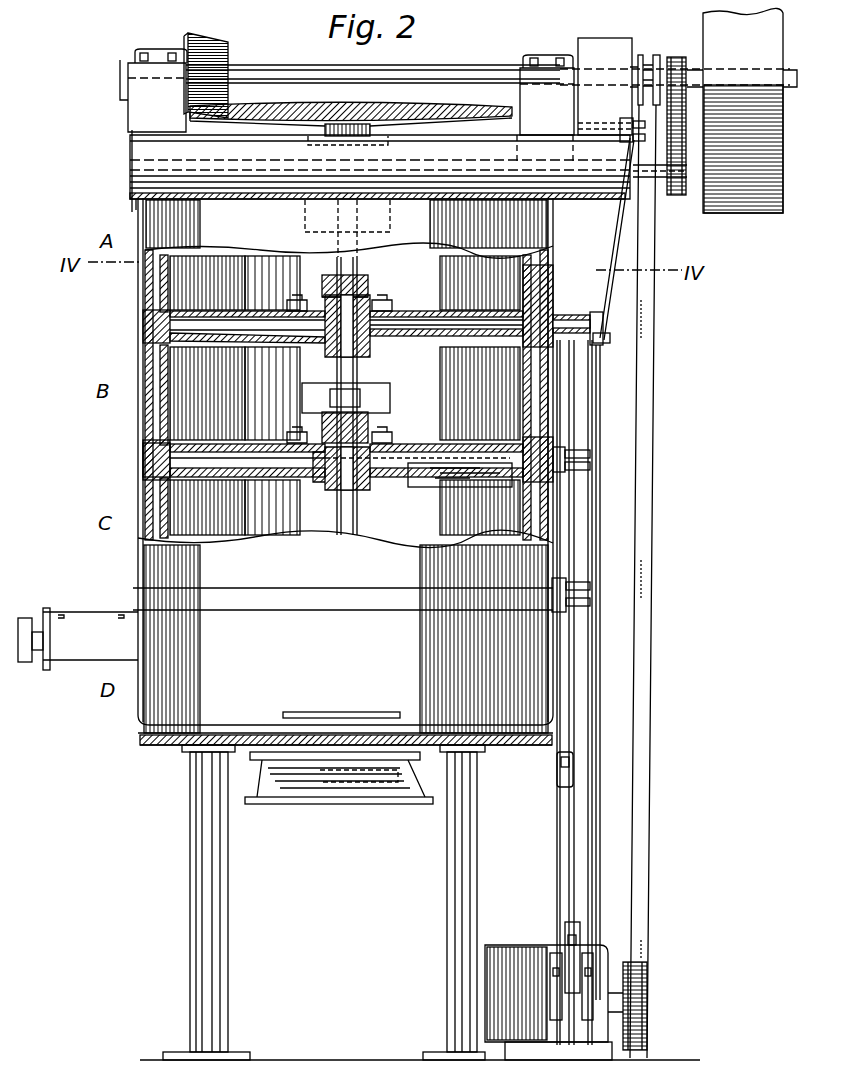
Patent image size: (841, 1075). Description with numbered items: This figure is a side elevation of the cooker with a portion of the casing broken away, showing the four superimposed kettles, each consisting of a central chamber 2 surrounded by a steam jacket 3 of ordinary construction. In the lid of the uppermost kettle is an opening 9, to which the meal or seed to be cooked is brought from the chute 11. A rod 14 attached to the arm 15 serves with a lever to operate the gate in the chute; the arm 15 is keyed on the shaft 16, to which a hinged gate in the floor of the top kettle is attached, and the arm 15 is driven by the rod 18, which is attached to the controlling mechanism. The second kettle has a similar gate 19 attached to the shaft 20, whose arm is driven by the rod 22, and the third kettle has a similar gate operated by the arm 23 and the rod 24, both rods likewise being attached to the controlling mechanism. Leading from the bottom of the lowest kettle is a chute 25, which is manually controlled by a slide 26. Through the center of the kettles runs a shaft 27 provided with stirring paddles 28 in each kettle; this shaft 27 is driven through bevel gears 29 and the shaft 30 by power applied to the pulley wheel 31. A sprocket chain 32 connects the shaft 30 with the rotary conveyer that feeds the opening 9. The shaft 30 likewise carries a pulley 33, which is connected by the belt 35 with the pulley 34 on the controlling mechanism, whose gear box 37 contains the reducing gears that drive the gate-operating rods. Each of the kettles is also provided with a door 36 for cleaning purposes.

The central chamber 2 is at (334, 387).
The steam jacket 3 is at (142, 445).
The opening 9 is at (310, 214).
The chute 11 is at (610, 40).
The rod 14 is at (608, 300).
The arm 15 is at (598, 316).
The shaft 16 is at (565, 317).
The rod 18 is at (599, 494).
The gate 19 is at (430, 486).
The shaft 20 is at (572, 456).
The rod 22 is at (580, 562).
The arm 23 is at (580, 588).
The rod 24 is at (556, 826).
The chute 25 is at (295, 800).
The slide 26 is at (296, 711).
The shaft 27 is at (353, 264).
The stirring paddles 28 is at (428, 312).
The bevel gears 29 is at (225, 42).
The shaft 30 is at (404, 70).
The pulley wheel 31 is at (708, 14).
The sprocket chain 32 is at (683, 124).
The pulley 33 is at (648, 56).
The pulley 34 is at (648, 982).
The belt 35 is at (645, 756).
The door 36 is at (308, 282).
The gear box 37 is at (554, 1002).